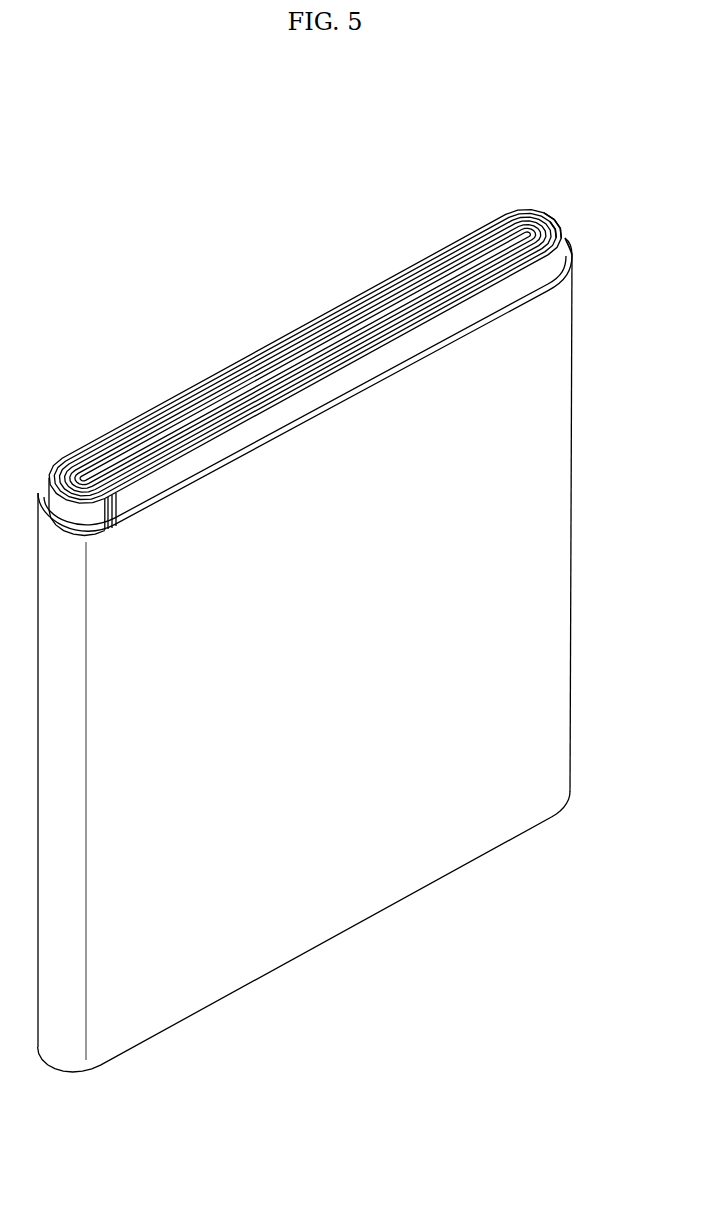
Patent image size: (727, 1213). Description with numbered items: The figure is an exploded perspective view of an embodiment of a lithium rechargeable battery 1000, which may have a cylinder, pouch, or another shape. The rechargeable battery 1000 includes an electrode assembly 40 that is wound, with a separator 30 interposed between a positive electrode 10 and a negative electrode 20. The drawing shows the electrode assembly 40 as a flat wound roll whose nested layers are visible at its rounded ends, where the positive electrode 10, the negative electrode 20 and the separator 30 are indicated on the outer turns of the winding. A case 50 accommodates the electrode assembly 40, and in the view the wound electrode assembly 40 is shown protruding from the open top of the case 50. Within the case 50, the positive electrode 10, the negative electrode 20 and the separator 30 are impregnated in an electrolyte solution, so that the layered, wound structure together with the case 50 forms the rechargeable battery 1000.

The rechargeable battery 1000 is at (254, 131).
The positive electrode 10 is at (572, 232).
The negative electrode 20 is at (545, 212).
The separator 30 is at (558, 219).
The electrode assembly 40 is at (262, 330).
The case 50 is at (555, 512).